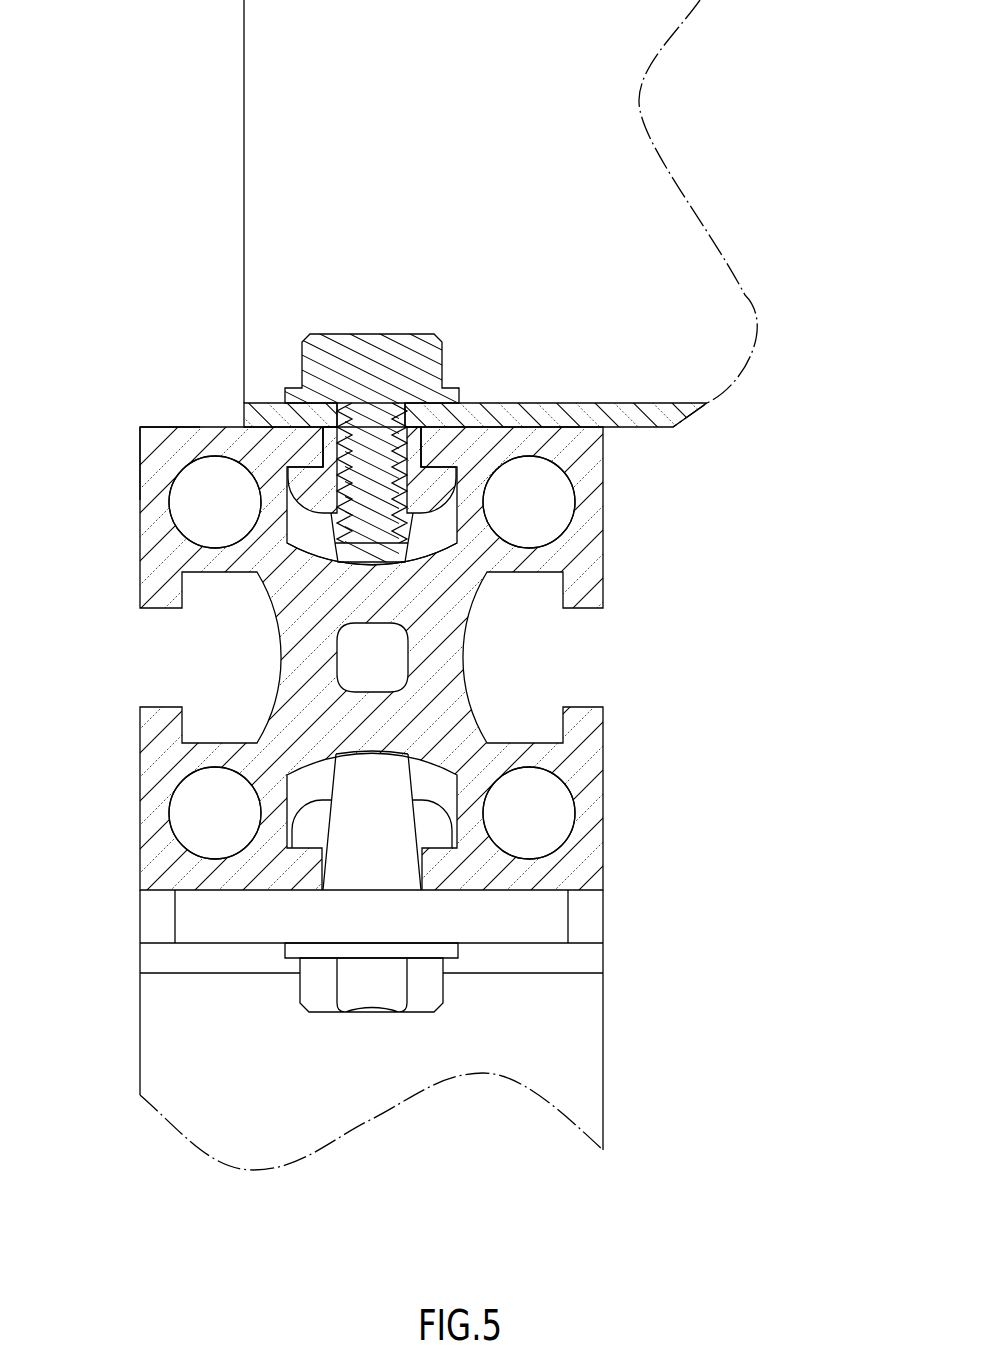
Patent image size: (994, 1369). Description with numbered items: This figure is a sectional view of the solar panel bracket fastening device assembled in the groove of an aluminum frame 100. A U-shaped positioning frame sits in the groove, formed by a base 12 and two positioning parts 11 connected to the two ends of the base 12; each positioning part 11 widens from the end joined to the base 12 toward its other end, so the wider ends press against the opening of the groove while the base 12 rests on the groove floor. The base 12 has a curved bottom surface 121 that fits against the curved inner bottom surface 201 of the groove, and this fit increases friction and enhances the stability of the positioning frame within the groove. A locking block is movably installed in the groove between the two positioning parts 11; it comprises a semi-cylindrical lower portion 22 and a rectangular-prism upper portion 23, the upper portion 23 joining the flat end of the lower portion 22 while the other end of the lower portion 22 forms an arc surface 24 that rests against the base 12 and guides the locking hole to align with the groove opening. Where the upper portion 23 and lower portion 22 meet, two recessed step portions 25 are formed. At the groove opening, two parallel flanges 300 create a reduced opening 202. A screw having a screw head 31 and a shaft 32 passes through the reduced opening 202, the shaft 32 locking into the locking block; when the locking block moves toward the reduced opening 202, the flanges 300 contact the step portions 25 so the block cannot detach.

The aluminum frame 100 is at (236, 149).
The positioning part 11 is at (455, 565).
The base 12 is at (420, 565).
The curved bottom surface 121 is at (323, 562).
The curved inner bottom surface 201 is at (323, 550).
The reduced opening 202 is at (440, 442).
The lower portion 22 is at (332, 557).
The upper portion 23 is at (312, 450).
The arc surface 24 is at (168, 428).
The step portion 25 is at (300, 460).
The flange 300 is at (320, 457).
The screw head 31 is at (377, 343).
The shaft 32 is at (372, 470).